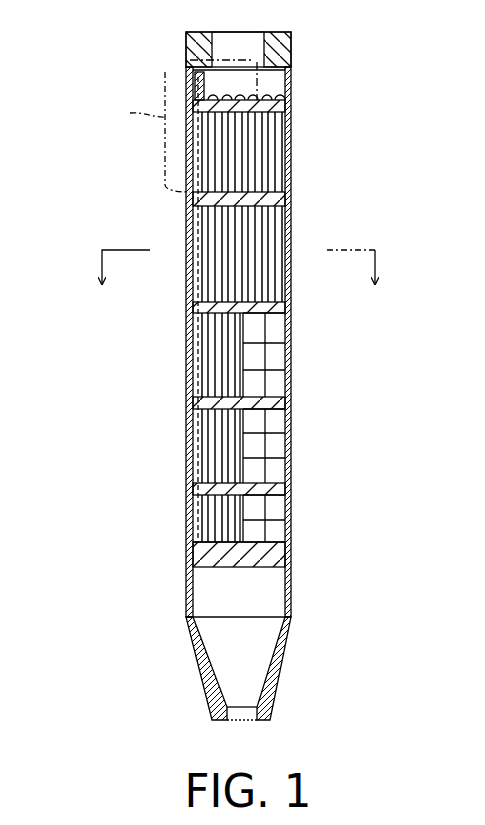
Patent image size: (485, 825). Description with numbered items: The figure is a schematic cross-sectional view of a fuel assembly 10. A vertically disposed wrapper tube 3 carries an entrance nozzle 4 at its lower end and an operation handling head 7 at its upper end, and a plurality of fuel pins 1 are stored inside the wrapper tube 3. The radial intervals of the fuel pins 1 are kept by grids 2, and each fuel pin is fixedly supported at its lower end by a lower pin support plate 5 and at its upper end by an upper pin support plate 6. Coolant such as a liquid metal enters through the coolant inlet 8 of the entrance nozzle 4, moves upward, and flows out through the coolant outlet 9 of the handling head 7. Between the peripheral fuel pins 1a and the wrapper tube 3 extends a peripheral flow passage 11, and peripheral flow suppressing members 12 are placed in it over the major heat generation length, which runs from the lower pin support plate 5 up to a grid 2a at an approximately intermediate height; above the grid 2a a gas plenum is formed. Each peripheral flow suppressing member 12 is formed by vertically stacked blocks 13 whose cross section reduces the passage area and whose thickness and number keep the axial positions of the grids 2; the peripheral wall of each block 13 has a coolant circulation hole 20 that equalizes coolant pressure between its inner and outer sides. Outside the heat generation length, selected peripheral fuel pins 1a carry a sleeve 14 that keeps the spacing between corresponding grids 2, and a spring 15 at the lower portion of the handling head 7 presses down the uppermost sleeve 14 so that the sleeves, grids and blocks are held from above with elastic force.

The fuel pins 1 is at (262, 243).
The peripheral fuel pins 1a is at (291, 268).
The grids 2 is at (188, 198).
The grid 2a is at (188, 306).
The wrapper tube 3 is at (293, 357).
The entrance nozzle 4 is at (200, 668).
The lower pin support plate 5 is at (291, 552).
The upper pin support plate 6 is at (291, 104).
The operation handling head 7 is at (291, 45).
The coolant inlet 8 is at (242, 722).
The coolant outlet 9 is at (230, 32).
The fuel assembly 10 is at (168, 376).
The peripheral flow passage 11 is at (187, 540).
The peripheral flow suppressing members 12 is at (280, 321).
The blocks 13 is at (286, 348).
The sleeve 14 is at (187, 159).
The spring 15 is at (188, 70).
The coolant circulation hole 20 is at (240, 328).